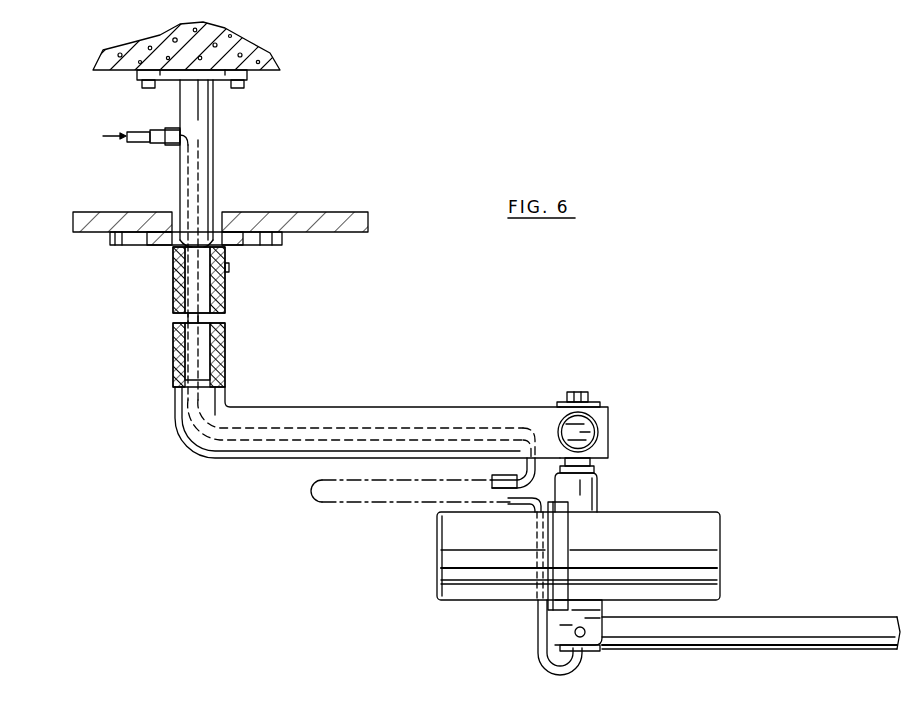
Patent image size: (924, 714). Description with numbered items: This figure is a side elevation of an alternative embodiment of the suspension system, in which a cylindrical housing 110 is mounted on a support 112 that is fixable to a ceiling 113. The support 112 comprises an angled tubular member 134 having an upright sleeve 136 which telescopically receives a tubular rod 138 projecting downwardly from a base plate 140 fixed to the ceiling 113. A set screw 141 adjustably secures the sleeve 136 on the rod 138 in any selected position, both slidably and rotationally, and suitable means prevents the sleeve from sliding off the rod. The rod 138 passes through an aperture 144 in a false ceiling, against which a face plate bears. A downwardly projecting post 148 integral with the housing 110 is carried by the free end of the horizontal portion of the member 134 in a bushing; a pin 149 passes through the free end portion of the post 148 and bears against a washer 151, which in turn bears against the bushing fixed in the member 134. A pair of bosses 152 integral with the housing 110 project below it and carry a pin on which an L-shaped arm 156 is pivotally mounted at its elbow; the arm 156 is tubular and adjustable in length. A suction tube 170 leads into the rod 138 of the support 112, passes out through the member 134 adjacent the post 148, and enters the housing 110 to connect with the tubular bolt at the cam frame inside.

The ceiling 113 is at (270, 59).
The base plate 140 is at (249, 76).
The tubular rod 138 is at (214, 166).
The aperture 144 is at (221, 212).
The set screw 141 is at (231, 268).
The upright sleeve 136 is at (226, 345).
The angled tubular member 134 is at (287, 410).
The support 112 is at (345, 400).
The pin 149 is at (575, 392).
The washer 151 is at (557, 402).
The post 148 is at (600, 490).
The cylindrical housing 110 is at (678, 505).
The suction tube 170 is at (540, 632).
The bosses 152 is at (597, 648).
The L-shaped arm 156 is at (770, 620).